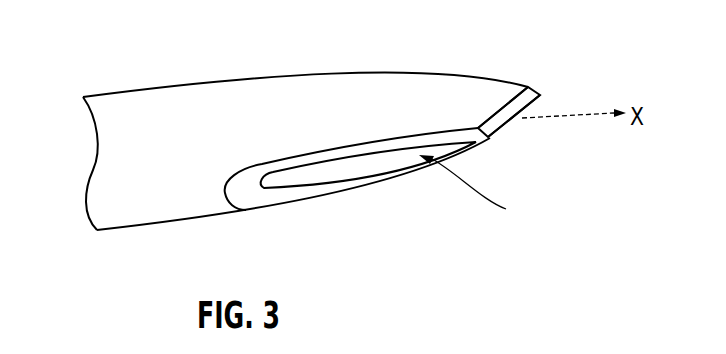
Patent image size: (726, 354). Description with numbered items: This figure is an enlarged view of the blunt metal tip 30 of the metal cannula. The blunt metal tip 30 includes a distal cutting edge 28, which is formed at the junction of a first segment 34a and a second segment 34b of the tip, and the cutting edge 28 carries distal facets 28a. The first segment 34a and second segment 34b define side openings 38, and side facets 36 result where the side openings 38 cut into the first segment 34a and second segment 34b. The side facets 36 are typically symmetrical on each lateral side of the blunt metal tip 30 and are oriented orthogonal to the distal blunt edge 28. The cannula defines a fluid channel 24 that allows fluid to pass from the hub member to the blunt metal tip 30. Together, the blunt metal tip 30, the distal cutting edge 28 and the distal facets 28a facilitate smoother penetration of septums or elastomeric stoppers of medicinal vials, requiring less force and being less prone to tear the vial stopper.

The blunt metal tip 30 is at (305, 135).
The first segment 34a is at (448, 77).
The second segment 34b is at (393, 183).
The side facets 36 is at (265, 202).
The side openings 38 is at (318, 178).
The fluid channel 24 is at (477, 189).
The cutting edge 28 is at (542, 94).
The distal facet 28a is at (529, 82).